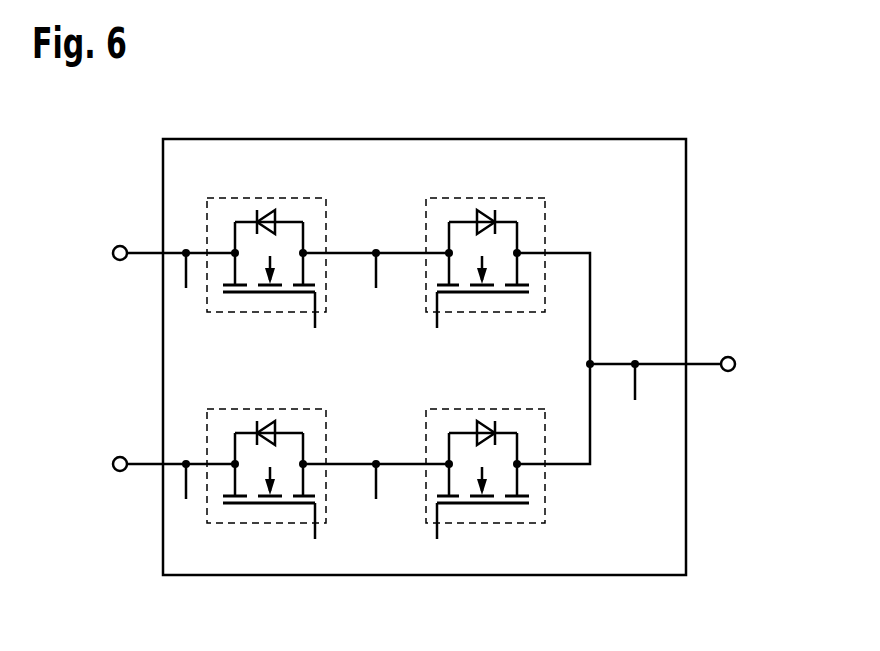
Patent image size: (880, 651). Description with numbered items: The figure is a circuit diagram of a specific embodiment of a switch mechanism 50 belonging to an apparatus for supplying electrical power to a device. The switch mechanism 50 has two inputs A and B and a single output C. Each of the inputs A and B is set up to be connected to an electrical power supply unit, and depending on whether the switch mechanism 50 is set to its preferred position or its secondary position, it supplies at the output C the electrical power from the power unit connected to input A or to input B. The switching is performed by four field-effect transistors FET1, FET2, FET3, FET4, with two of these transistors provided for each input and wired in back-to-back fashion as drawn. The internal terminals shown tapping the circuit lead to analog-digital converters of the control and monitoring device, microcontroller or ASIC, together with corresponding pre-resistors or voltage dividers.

The switch mechanism 50 is at (686, 193).
The input A is at (161, 252).
The input B is at (161, 462).
The output C is at (675, 363).
The field-effect transistor FET1 is at (266, 245).
The field-effect transistor FET2 is at (485, 245).
The field-effect transistor FET3 is at (266, 456).
The field-effect transistor FET4 is at (485, 456).